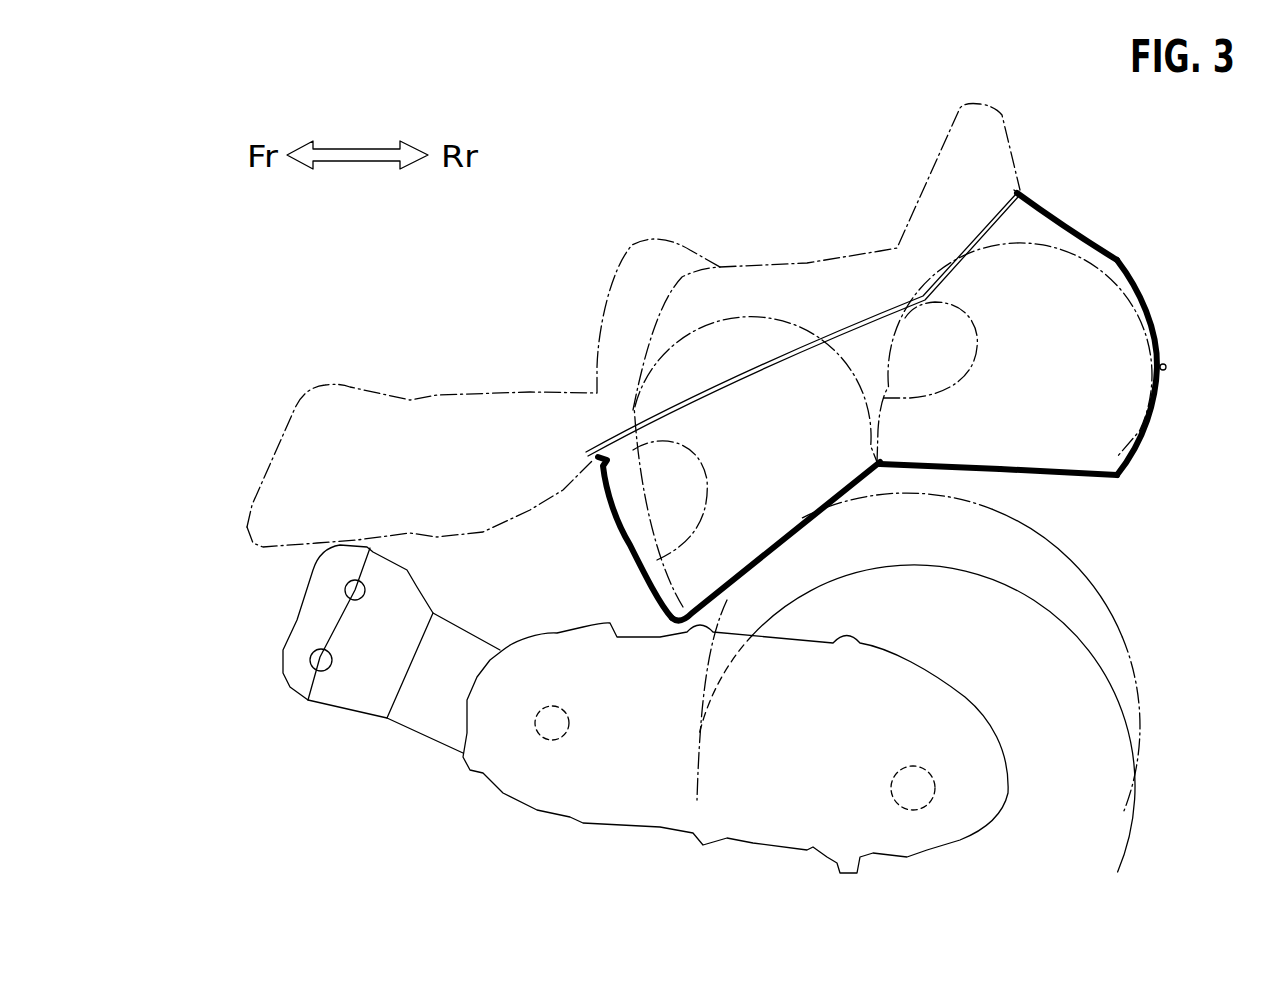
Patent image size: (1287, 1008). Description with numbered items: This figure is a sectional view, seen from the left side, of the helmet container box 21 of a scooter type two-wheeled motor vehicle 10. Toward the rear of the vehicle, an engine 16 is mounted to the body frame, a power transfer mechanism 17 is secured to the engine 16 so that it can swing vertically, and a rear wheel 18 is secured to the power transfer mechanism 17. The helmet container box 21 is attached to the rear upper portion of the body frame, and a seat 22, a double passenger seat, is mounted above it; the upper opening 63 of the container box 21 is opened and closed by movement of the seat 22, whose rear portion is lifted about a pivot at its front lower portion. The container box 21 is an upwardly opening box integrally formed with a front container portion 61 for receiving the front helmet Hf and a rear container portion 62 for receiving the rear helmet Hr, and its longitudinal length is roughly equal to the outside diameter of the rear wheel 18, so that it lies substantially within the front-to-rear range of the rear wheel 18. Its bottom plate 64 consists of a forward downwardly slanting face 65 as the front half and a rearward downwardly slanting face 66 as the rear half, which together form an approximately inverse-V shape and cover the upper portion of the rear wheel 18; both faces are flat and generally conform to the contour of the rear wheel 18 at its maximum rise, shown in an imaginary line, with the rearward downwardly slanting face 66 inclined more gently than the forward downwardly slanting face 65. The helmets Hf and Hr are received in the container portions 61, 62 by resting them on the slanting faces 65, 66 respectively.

The two-wheeled motor vehicle 10 is at (258, 341).
The engine 16 is at (433, 743).
The power transfer mechanism 17 is at (647, 810).
The rear wheel 18 is at (1107, 680).
The helmet container box 21 is at (1114, 253).
The seat 22 is at (807, 263).
The front container portion 61 is at (623, 497).
The rear container portion 62 is at (1127, 341).
The opening 63 is at (983, 230).
The bottom plate 64 is at (1066, 480).
The forward downwardly slanting face 65 is at (733, 567).
The rearward downwardly slanting face 66 is at (977, 462).
The front helmet Hf is at (742, 316).
The rear helmet Hr is at (1053, 247).